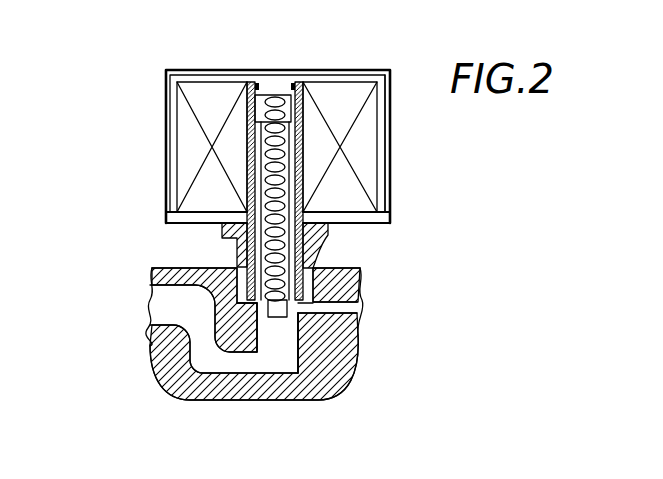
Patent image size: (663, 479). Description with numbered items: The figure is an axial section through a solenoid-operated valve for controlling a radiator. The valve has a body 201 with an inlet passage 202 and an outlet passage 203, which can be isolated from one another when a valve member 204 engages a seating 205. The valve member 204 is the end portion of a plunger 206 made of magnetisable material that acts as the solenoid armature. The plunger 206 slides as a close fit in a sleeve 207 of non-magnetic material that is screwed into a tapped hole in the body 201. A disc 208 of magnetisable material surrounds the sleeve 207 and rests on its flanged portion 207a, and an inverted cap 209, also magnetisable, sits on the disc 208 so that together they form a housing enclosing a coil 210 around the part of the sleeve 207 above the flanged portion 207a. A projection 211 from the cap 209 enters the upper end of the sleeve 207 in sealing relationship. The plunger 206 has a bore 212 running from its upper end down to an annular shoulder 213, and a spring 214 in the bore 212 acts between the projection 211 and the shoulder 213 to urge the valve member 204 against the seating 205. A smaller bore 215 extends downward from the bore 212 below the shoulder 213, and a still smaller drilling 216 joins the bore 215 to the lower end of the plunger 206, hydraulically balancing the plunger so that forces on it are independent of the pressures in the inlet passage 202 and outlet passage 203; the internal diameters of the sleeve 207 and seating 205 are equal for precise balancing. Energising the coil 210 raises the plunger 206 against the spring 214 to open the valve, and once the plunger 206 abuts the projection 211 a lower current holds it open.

The body 201 is at (327, 373).
The inlet passage 202 is at (152, 297).
The outlet passage 203 is at (360, 297).
The valve member 204 is at (190, 358).
The seating 205 is at (337, 347).
The plunger 206 is at (331, 236).
The sleeve 207 is at (251, 148).
The flanged portion 207a is at (224, 232).
The disc 208 is at (378, 213).
The inverted cap 209 is at (381, 163).
The coil 210 is at (366, 130).
The projection 211 is at (276, 80).
The bore 212 is at (258, 96).
The annular shoulder 213 is at (331, 266).
The spring 214 is at (262, 132).
The bore 215 is at (362, 310).
The drilling 216 is at (272, 340).